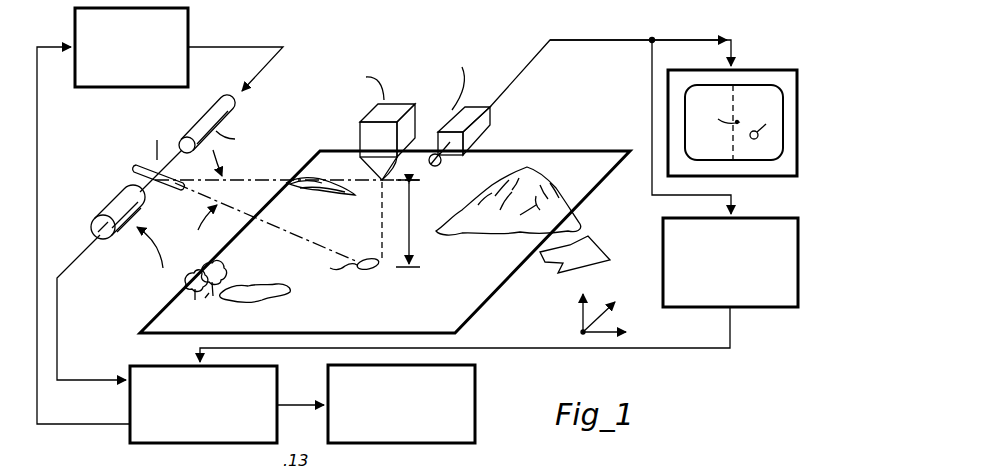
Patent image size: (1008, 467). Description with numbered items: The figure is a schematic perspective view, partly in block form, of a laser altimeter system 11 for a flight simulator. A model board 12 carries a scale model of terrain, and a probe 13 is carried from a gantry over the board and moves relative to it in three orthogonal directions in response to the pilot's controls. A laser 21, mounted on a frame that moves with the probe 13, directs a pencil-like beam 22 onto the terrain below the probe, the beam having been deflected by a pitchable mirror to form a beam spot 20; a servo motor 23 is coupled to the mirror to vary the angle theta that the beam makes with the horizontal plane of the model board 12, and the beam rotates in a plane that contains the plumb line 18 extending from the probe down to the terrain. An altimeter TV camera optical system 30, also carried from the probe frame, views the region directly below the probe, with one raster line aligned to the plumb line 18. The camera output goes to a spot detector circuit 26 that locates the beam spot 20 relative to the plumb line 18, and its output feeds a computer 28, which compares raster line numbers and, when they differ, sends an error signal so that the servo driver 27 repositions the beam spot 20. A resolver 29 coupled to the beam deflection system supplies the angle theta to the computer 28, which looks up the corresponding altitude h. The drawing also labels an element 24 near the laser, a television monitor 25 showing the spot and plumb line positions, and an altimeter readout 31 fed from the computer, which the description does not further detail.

The laser altimeter system 11 is at (124, 127).
The model board 12 is at (492, 298).
The probe 13 is at (360, 135).
The plumb line 18 is at (378, 222).
The beam spot 20 is at (340, 262).
The laser 21 is at (173, 190).
The beam 22 is at (306, 201).
The servo motor 23 is at (200, 124).
The laser beam 24 is at (142, 183).
The T.V. monitor 25 is at (766, 68).
The spot detector circuit 26 is at (742, 318).
The servo driver 27 is at (75, 31).
The computer 28 is at (148, 365).
The resolver 29 is at (95, 213).
The altimeter TV camera optical system 30 is at (490, 122).
The altimeter readout 31 is at (478, 392).